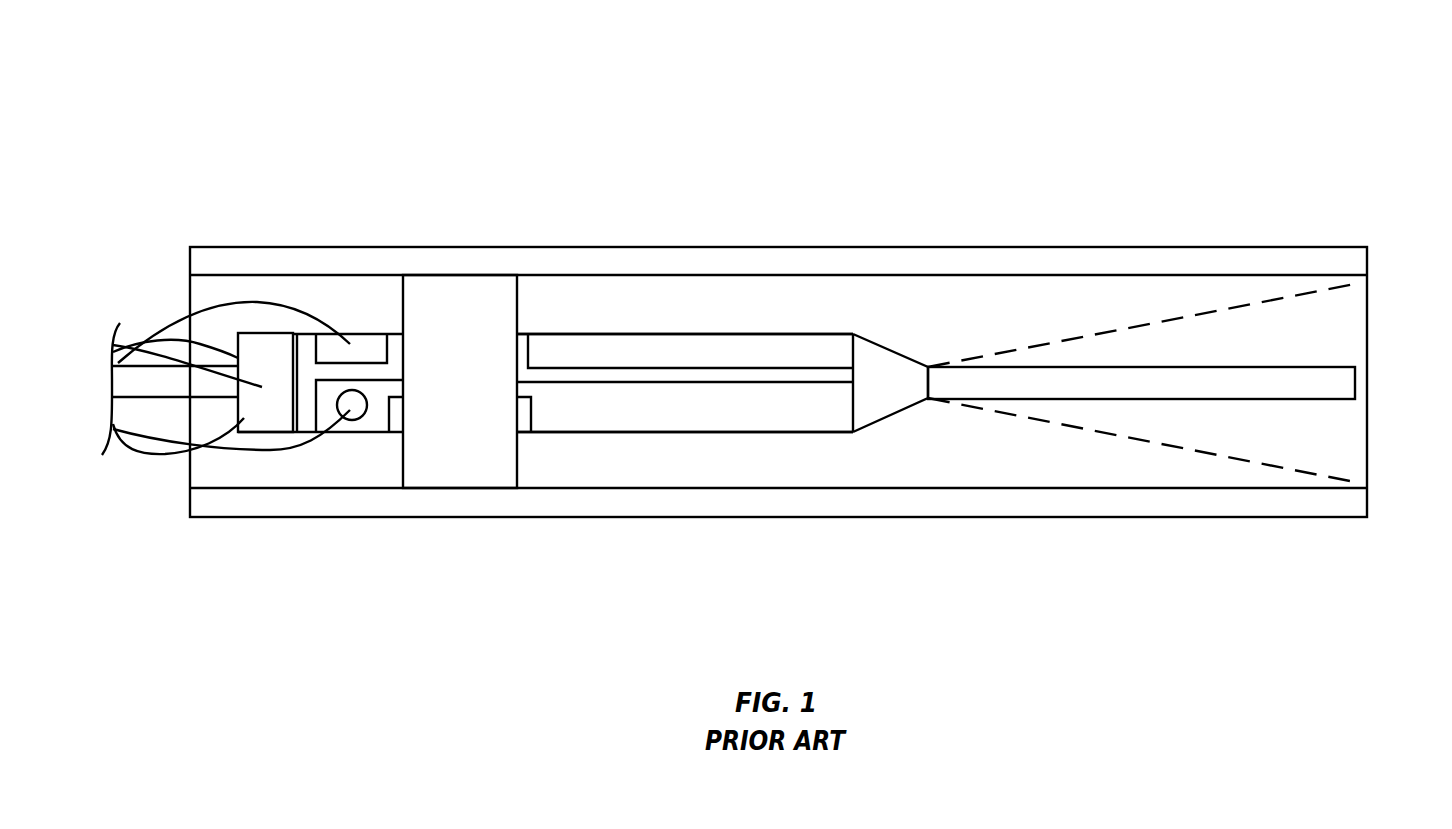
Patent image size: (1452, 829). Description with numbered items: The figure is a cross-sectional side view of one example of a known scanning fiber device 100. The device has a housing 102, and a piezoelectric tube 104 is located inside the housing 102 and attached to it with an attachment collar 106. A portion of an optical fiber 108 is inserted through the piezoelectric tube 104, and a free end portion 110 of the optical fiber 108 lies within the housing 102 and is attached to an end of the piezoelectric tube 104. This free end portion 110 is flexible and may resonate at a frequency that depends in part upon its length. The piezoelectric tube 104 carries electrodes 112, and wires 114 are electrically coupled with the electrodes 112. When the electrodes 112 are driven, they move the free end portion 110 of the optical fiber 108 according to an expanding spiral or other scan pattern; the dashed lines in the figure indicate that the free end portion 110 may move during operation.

The scanning fiber device 100 is at (366, 145).
The housing 102 is at (700, 247).
The piezoelectric tube 104 is at (895, 325).
The attachment collar 106 is at (518, 460).
The optical fiber 108 is at (174, 387).
The free end portion 110 is at (1316, 350).
The electrodes 112 is at (733, 333).
The wires 114 is at (139, 321).